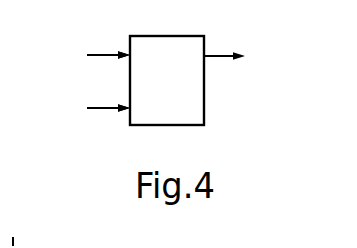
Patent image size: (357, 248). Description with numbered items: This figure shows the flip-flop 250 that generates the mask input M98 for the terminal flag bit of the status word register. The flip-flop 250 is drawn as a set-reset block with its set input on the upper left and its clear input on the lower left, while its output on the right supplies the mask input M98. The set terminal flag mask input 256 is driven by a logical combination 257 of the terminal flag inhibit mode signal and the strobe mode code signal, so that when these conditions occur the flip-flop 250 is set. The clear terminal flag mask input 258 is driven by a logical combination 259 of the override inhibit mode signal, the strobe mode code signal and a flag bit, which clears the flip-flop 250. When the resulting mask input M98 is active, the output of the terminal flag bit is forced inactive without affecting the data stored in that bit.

The flip-flop 250 is at (188, 90).
The set terminal flag mask input 256 is at (127, 52).
The logical combination of terminal flag inhibit mode and strobe mode code signals 257 is at (86, 56).
The clear terminal flag mask input 258 is at (127, 106).
The logical combination of override inhibit mode and strobe mode code signals and fl 259 is at (86, 110).
The mask input M98 is at (248, 56).